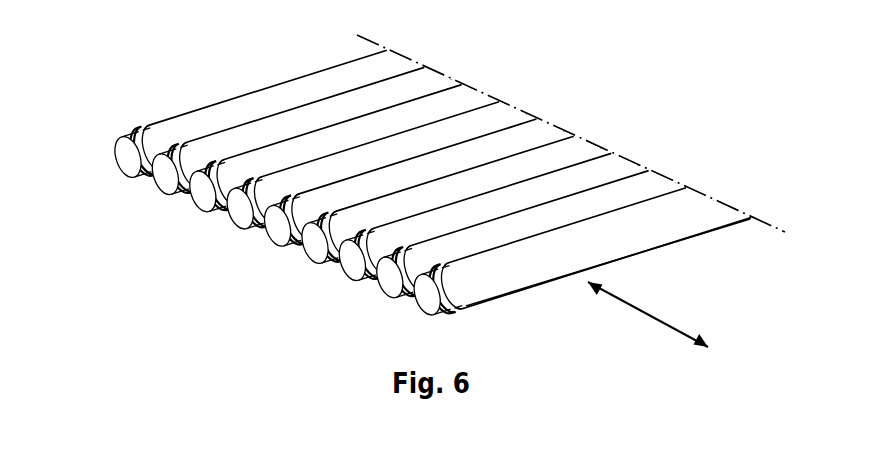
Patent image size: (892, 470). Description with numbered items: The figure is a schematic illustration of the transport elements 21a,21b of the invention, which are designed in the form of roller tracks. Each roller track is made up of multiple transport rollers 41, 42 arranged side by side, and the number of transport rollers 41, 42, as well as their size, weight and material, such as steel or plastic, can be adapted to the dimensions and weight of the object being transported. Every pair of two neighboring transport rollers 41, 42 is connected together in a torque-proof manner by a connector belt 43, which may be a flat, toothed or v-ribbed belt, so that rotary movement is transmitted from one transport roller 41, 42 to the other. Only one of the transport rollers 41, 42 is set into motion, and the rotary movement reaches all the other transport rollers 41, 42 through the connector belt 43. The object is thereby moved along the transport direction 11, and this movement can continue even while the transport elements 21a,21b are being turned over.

The transport roller 41 is at (416, 161).
The transport roller 42 is at (463, 183).
The connector belt 43 is at (264, 230).
The transport direction 11 is at (655, 318).
The transport elements 21a,21b is at (665, 255).